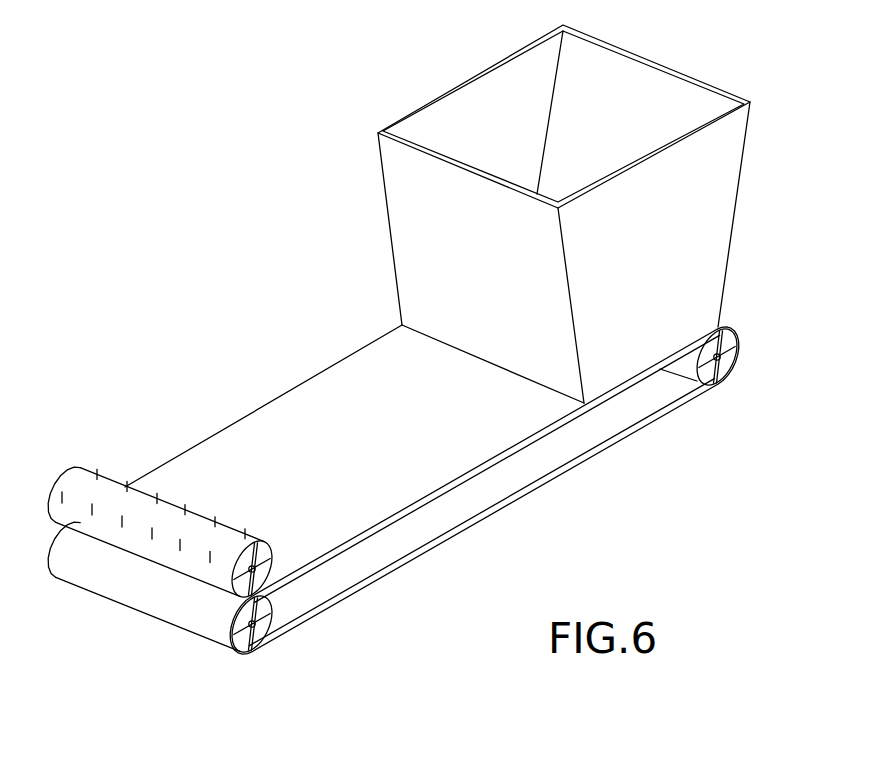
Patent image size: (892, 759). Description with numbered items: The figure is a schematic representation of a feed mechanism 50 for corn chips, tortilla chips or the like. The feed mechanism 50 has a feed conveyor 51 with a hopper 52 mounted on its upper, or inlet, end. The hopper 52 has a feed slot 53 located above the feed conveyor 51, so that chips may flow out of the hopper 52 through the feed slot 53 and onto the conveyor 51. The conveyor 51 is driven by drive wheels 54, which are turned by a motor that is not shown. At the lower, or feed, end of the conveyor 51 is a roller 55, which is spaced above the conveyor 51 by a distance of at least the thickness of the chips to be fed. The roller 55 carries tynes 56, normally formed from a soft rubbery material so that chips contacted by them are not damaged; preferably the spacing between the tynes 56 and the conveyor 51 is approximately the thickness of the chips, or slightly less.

The feed mechanism 50 is at (200, 340).
The feed conveyor 51 is at (292, 428).
The hopper 52 is at (685, 85).
The feed slot 53 is at (393, 340).
The drive wheels 54 is at (737, 370).
The roller 55 is at (288, 575).
The tynes 56 is at (75, 485).